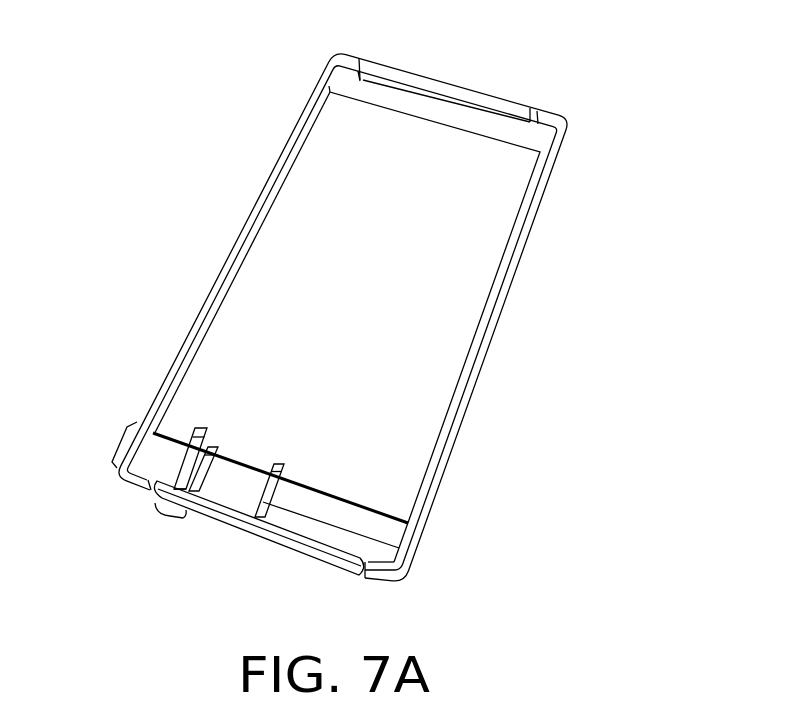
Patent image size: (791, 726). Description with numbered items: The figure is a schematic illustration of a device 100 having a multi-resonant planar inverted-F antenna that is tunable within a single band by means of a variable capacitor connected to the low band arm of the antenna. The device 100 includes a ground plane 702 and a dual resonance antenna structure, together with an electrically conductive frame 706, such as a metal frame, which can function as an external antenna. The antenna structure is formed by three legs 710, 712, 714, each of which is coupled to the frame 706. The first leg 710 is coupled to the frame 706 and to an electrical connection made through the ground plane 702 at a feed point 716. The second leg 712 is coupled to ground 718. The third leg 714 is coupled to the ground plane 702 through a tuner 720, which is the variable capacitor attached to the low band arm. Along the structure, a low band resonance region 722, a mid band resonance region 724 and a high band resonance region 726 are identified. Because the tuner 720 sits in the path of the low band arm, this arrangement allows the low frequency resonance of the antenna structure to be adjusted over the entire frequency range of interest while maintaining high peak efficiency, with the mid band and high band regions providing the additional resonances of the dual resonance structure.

The device 100 is at (567, 103).
The ground plane 702 is at (318, 185).
The electrically conductive frame 706 is at (493, 336).
The leg 710 is at (184, 450).
The leg 712 is at (245, 460).
The leg 714 is at (399, 548).
The feed point 716 is at (201, 428).
The ground 718 is at (219, 449).
The tuner 720 is at (285, 463).
The low band resonance region 722 is at (253, 536).
The mid band resonance region 724 is at (162, 528).
The high band resonance region 726 is at (97, 444).